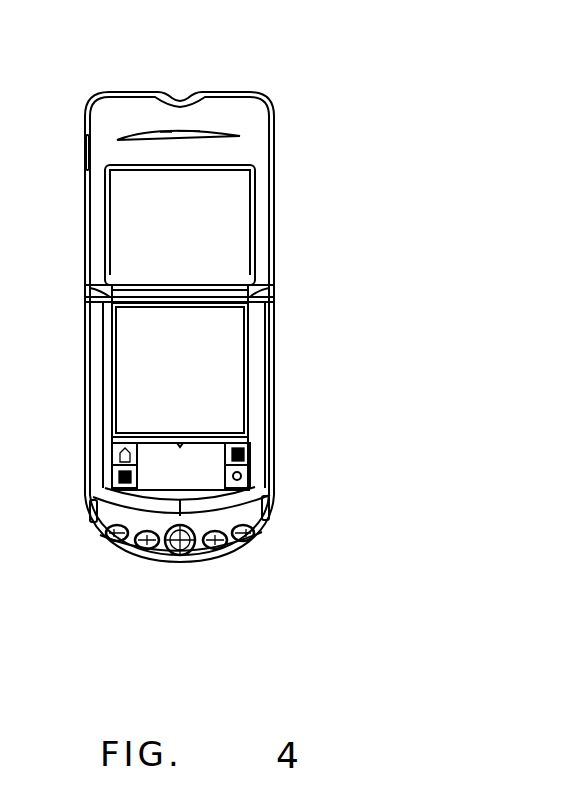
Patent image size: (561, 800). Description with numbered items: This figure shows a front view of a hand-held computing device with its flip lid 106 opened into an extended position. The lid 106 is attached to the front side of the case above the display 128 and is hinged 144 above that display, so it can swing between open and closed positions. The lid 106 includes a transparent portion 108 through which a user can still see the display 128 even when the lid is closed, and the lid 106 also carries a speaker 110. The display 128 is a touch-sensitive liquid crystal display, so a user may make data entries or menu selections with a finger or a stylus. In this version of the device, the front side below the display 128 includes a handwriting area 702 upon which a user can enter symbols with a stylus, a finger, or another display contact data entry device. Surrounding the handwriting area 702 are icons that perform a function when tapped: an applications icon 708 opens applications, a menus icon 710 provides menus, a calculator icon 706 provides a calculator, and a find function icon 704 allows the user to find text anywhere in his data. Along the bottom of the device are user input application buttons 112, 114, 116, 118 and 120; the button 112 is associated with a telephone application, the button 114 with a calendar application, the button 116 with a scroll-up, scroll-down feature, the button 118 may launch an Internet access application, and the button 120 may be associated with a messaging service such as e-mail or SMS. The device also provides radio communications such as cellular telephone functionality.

The lid 106 is at (272, 162).
The transparent portion 108 is at (218, 240).
The speaker 110 is at (226, 138).
The display 128 is at (212, 368).
The hinge 144 is at (275, 288).
The handwriting area 702 is at (240, 480).
The find function icon 704 is at (262, 479).
The calculator icon 706 is at (250, 445).
The applications icon 708 is at (120, 457).
The menus icon 710 is at (122, 480).
The application button 112 is at (106, 544).
The application button 114 is at (140, 551).
The application button 116 is at (179, 556).
The application button 118 is at (221, 551).
The application button 120 is at (255, 540).